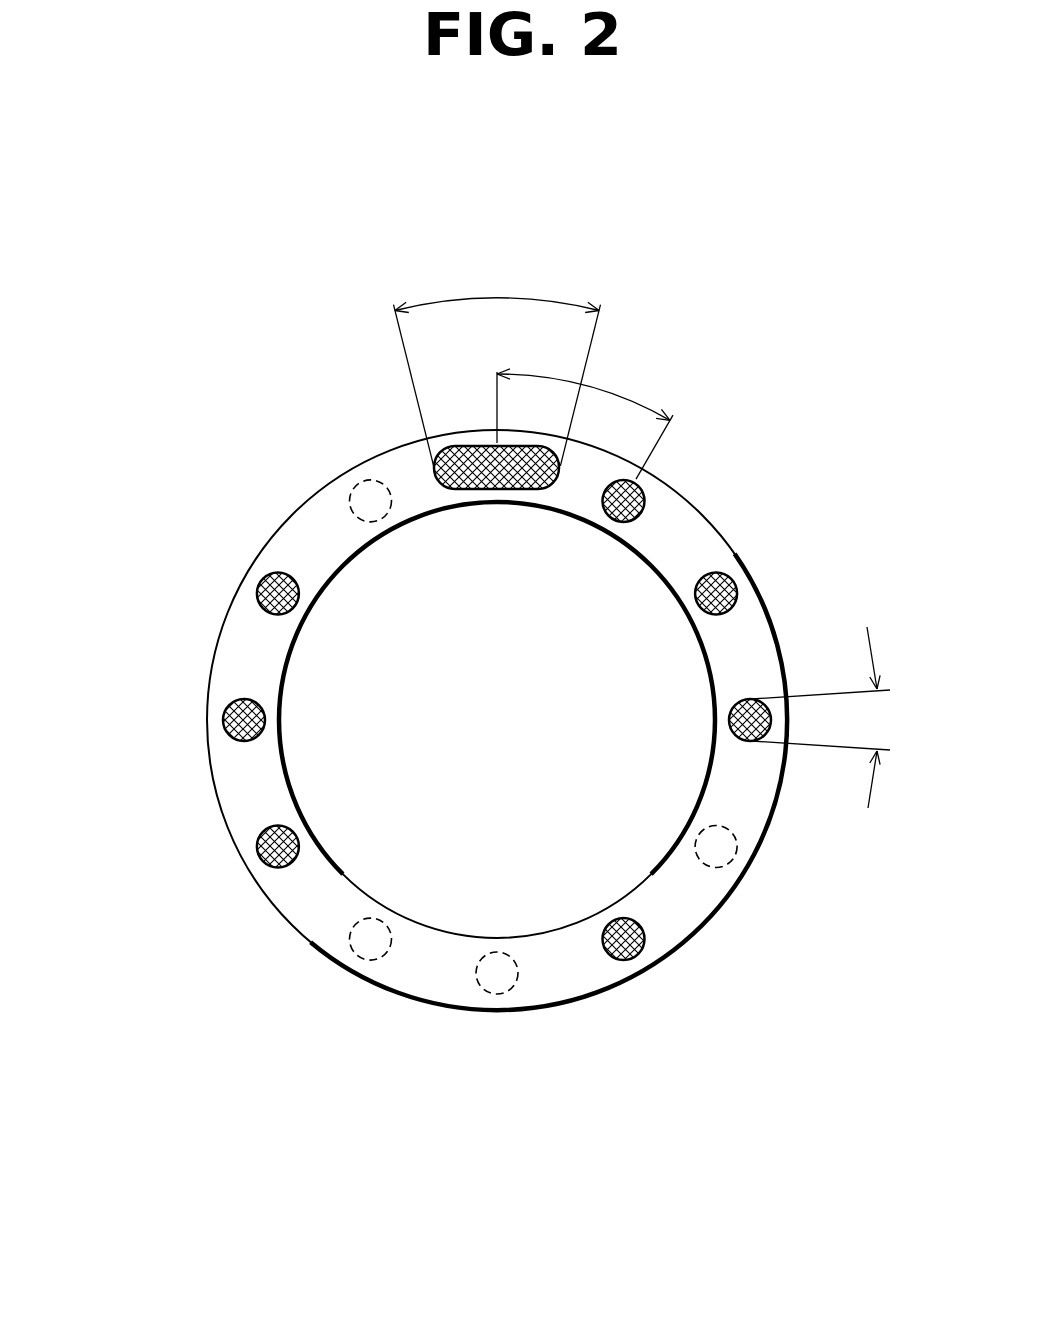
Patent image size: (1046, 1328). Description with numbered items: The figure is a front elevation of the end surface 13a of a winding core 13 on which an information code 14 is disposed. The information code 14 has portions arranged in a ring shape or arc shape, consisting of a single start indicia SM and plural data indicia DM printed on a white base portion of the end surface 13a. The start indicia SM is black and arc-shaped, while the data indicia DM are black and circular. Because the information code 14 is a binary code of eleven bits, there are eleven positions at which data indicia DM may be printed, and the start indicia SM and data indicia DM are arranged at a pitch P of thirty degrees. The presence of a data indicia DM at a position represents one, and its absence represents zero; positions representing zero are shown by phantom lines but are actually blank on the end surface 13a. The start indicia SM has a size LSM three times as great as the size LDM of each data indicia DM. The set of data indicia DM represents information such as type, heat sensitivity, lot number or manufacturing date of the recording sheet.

The winding core 13 is at (495, 1050).
The end surface 13a is at (747, 802).
The information code 14 is at (296, 366).
The data indicia DM is at (228, 710).
The start indicia SM is at (468, 457).
The size of start indicia LSM is at (485, 307).
The size of data indicia LDM is at (832, 717).
The pitch P is at (585, 419).